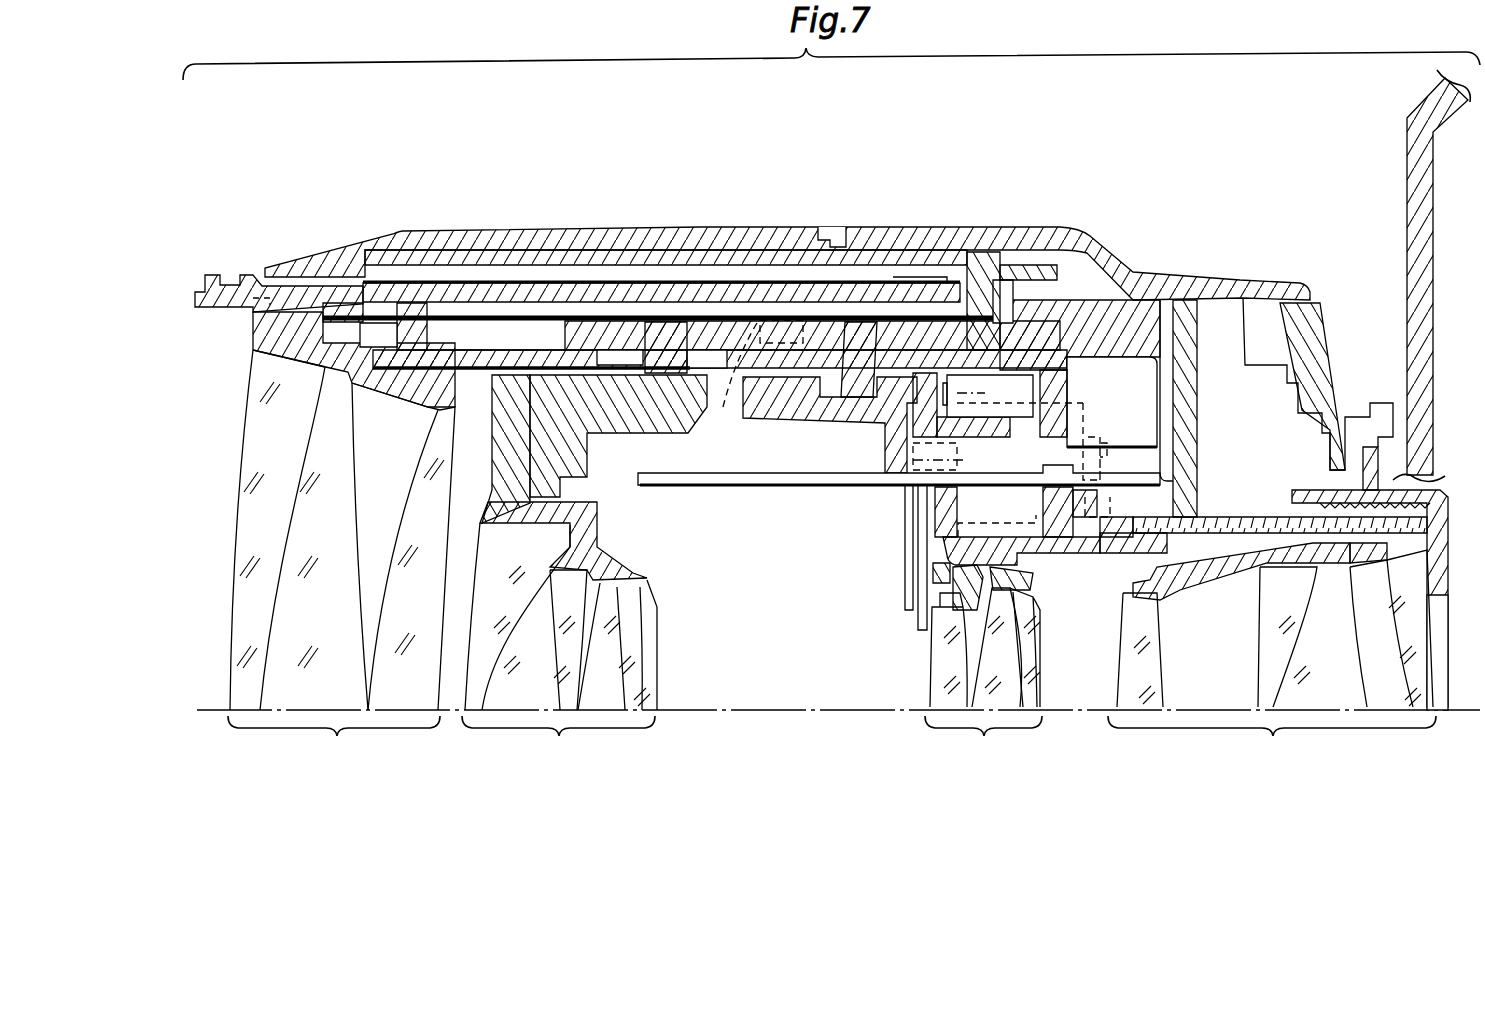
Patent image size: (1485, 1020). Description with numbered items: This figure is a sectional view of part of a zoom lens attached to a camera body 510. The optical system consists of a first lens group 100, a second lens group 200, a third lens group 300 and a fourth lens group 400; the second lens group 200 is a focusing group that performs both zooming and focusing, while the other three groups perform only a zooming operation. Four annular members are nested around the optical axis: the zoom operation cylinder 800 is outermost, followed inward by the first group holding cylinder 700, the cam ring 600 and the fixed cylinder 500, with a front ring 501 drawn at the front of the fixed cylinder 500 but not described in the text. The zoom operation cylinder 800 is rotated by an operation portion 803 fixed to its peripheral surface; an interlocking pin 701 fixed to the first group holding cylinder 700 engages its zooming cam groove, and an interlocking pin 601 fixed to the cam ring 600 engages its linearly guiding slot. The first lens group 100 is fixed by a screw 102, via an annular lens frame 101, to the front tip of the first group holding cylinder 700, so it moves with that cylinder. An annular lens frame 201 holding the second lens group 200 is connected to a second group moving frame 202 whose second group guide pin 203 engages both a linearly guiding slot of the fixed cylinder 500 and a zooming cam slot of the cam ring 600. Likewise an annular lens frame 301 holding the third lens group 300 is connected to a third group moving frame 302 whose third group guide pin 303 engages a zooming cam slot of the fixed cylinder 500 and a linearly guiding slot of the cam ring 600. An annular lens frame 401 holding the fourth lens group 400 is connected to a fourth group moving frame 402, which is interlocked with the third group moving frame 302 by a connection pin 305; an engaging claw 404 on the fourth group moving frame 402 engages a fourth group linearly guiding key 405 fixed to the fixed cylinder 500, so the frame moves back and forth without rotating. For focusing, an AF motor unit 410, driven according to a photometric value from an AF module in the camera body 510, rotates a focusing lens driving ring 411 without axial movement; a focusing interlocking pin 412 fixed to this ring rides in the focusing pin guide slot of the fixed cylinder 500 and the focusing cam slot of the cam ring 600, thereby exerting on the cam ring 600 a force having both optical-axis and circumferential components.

The first lens group 100 is at (341, 560).
The annular lens frame 101 is at (262, 330).
The screw 102 is at (268, 310).
The second lens group 200 is at (559, 647).
The annular lens frame 201 is at (597, 530).
The second group moving frame 202 is at (613, 417).
The second group guide pin 203 is at (667, 330).
The third lens group 300 is at (983, 679).
The annular lens frame 301 is at (1017, 573).
The third group moving frame 302 is at (1100, 547).
The third group guide pin 303 is at (727, 380).
The connection pin 305 is at (1105, 522).
The fourth lens group 400 is at (1272, 660).
The annular lens frame 401 is at (1217, 573).
The fourth group moving frame 402 is at (1237, 523).
The engaging claw 404 is at (1053, 510).
The fourth group linearly guiding key 405 is at (780, 480).
The AF motor unit 410 is at (1013, 388).
The focusing lens driving ring 411 is at (853, 385).
The focusing interlocking pin 412 is at (857, 330).
The fixed cylinder 500 is at (470, 350).
The front ring 501 is at (410, 316).
The camera body 510 is at (1407, 200).
The cam ring 600 is at (587, 337).
The interlocking pin 601 is at (977, 265).
The first group holding cylinder 700 is at (710, 290).
The interlocking pin 701 is at (1020, 273).
The zoom operation cylinder 800 is at (750, 253).
The operation portion 803 is at (828, 240).